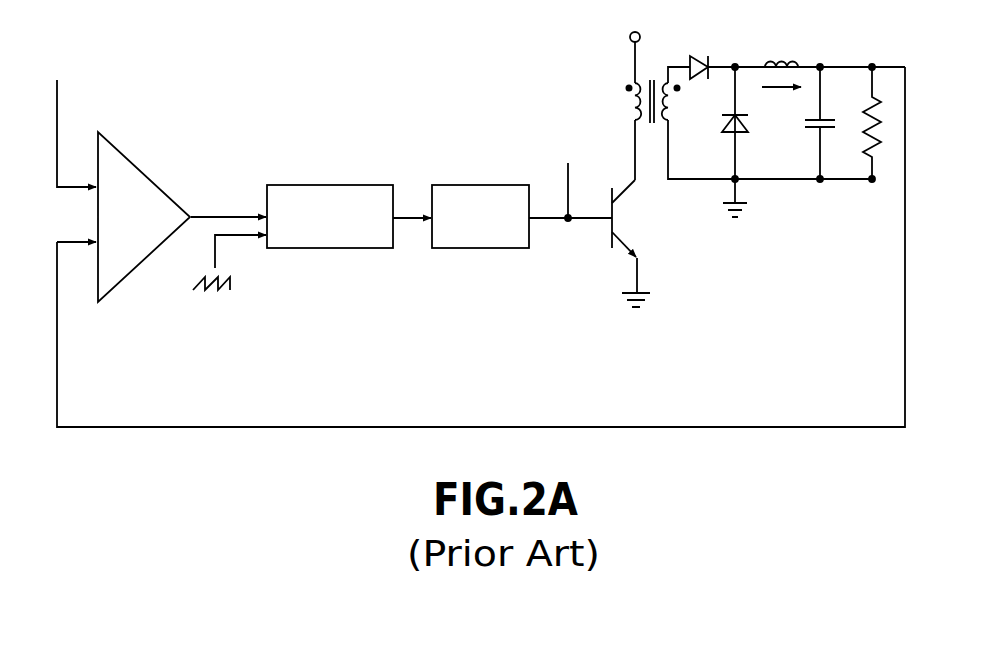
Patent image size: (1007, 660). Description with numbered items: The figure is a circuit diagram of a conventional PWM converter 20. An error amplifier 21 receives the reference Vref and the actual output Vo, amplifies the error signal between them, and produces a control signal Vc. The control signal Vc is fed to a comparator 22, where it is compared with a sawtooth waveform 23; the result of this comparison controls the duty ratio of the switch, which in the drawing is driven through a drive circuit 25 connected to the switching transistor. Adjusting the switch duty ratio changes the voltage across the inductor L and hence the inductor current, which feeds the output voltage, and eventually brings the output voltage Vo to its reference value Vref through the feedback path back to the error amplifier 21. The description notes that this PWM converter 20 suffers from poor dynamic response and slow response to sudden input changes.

The PWM converter 20 is at (304, 109).
The error amplifier 21 is at (118, 288).
The comparator 22 is at (350, 185).
The sawtooth waveform 23 is at (217, 253).
The drive circuit 25 is at (480, 248).